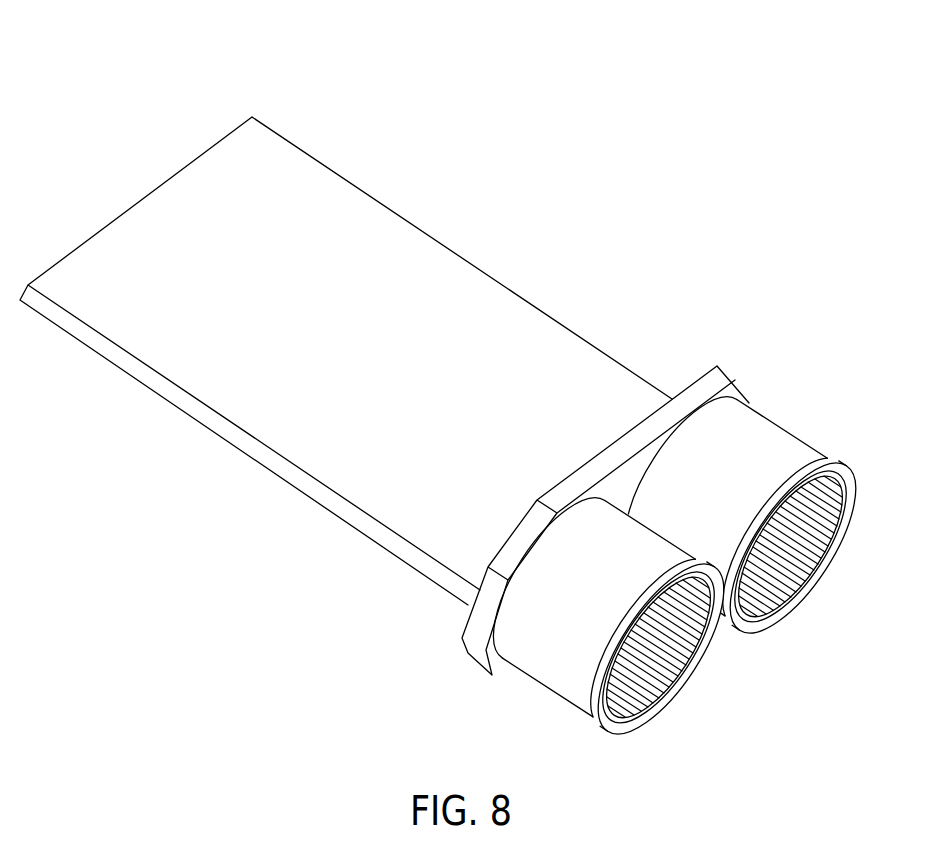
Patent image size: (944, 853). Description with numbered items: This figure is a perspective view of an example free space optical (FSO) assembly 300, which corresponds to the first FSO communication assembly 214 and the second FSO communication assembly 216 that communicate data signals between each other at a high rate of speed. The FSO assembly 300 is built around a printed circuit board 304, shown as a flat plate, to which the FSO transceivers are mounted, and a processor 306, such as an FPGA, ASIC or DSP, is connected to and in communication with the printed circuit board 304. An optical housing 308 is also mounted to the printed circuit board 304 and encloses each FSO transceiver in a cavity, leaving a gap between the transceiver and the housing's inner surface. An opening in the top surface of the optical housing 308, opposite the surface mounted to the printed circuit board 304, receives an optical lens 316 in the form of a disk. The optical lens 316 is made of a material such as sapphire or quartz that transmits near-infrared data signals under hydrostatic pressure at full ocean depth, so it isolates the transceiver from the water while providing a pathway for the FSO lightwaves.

The FSO assembly 300 is at (186, 79).
The first FSO communication assembly 214 is at (450, 402).
The second FSO communication assembly 216 is at (450, 435).
The printed circuit board 304 is at (633, 443).
The processor 306 is at (448, 272).
The optical housing 308 is at (767, 442).
The optical lens 316 is at (795, 568).